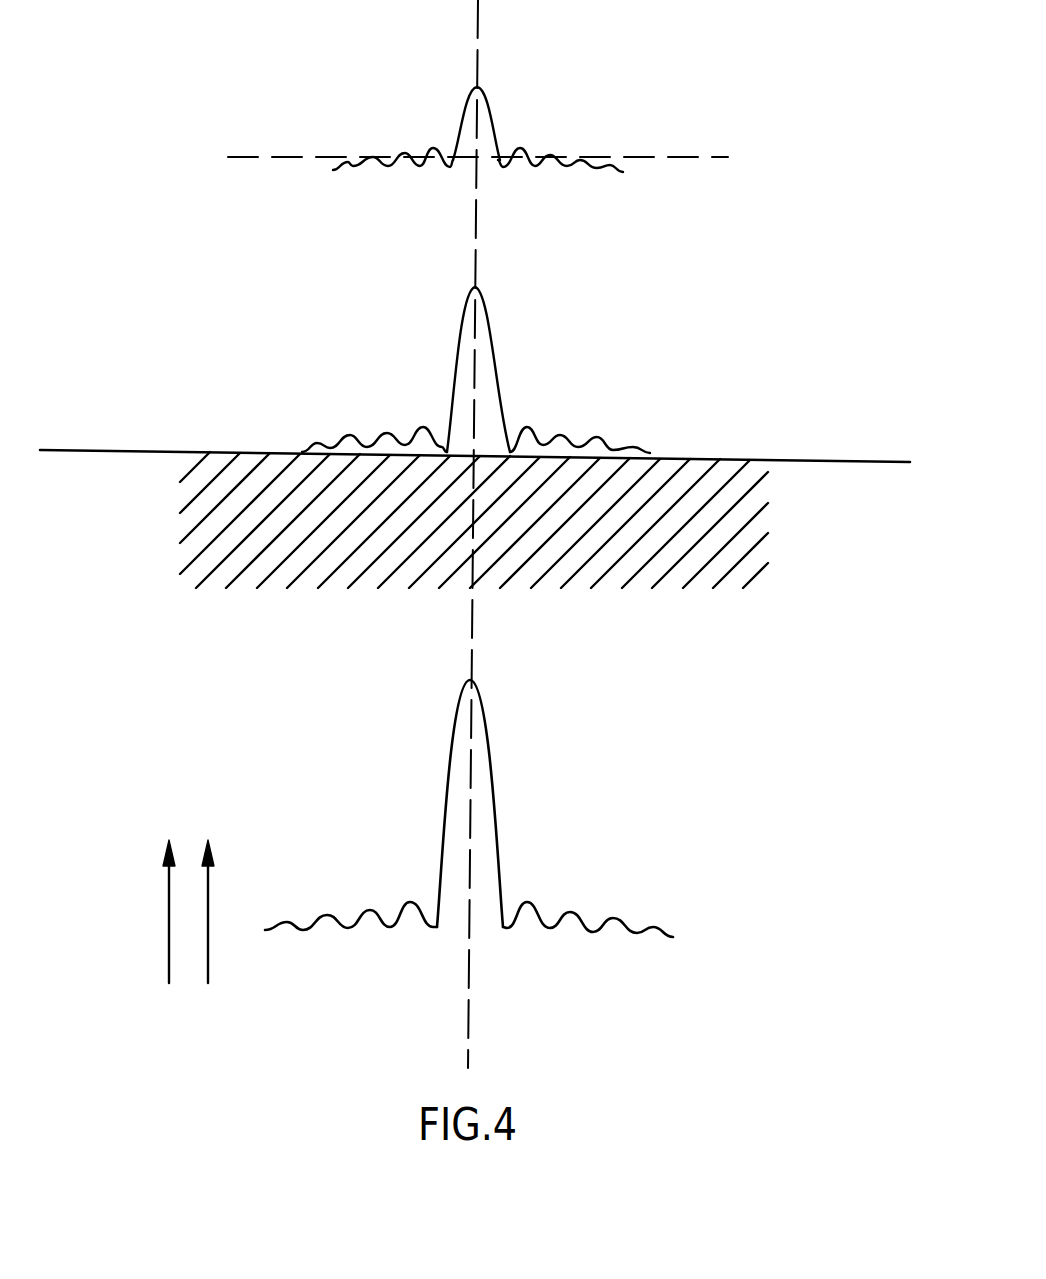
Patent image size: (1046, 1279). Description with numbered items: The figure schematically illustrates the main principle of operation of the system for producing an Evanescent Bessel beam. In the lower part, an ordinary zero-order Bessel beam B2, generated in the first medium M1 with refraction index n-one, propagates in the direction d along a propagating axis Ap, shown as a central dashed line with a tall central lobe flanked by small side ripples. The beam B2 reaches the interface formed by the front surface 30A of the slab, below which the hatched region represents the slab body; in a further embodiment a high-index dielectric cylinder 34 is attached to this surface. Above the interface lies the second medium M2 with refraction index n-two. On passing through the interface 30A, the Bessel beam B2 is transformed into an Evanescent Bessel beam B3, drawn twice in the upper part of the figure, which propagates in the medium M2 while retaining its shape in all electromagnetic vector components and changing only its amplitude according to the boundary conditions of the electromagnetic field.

The Evanescent Bessel beam B3 is at (552, 150).
The Bessel beam B2 is at (363, 920).
The front surface of the slab 30A is at (742, 458).
The cylinder 34 is at (778, 532).
The first medium M1 is at (712, 666).
The second medium M2 is at (714, 386).
The propagating axis Ap is at (470, 978).
The direction of propagation d is at (167, 911).